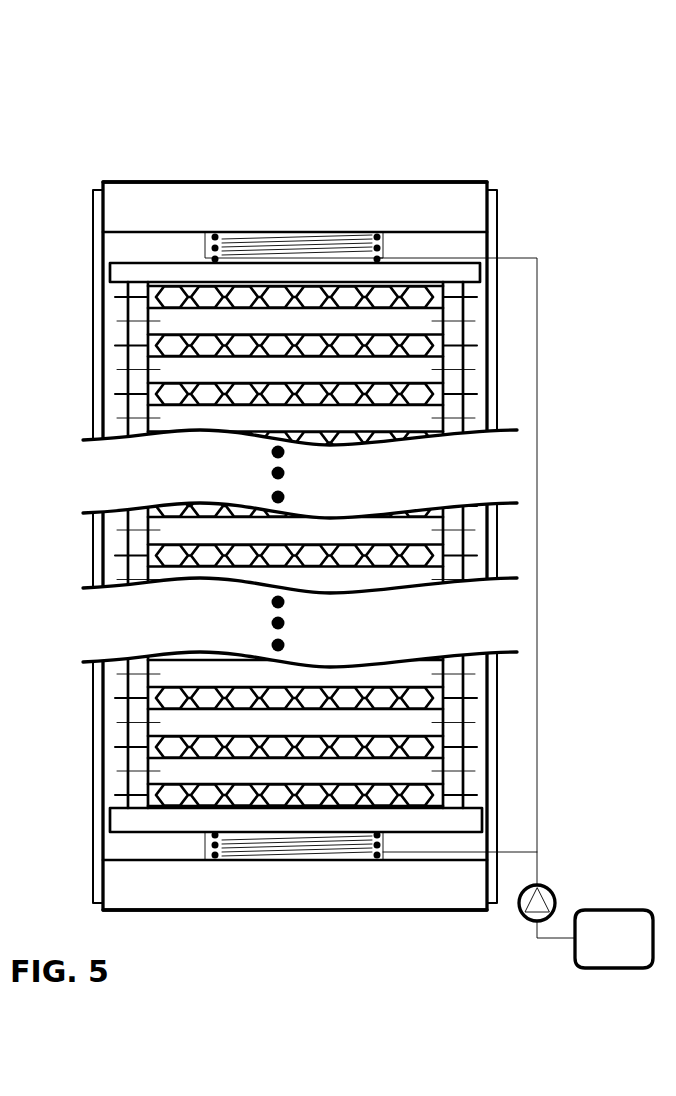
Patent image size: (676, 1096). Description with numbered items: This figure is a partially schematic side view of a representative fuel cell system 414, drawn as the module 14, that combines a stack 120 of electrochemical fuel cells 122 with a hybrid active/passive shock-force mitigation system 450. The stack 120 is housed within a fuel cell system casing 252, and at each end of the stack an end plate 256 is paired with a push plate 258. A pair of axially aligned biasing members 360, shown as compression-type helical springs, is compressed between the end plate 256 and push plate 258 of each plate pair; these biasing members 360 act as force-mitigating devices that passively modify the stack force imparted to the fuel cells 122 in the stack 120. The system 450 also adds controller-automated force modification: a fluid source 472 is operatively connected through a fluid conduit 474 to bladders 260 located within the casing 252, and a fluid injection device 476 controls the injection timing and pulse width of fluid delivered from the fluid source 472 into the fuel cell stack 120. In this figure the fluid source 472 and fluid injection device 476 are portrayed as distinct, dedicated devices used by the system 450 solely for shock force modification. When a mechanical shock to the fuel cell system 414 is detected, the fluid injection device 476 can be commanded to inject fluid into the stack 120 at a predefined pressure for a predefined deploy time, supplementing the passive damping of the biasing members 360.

The battery module 14 is at (15, 108).
The fuel cell system 414 is at (545, 133).
The fuel cell system casing 252 is at (524, 236).
The end plate 256 is at (357, 182).
The push plate 258 is at (110, 264).
The bladders 260 is at (212, 257).
The biasing members 360 is at (250, 242).
The fuel cell stack 120 is at (108, 376).
The fuel cells 122 is at (482, 310).
The shock-force mitigation system 450 is at (523, 615).
The fluid source 472 is at (622, 910).
The fluid conduit 474 is at (555, 940).
The fluid injection device 476 is at (552, 886).